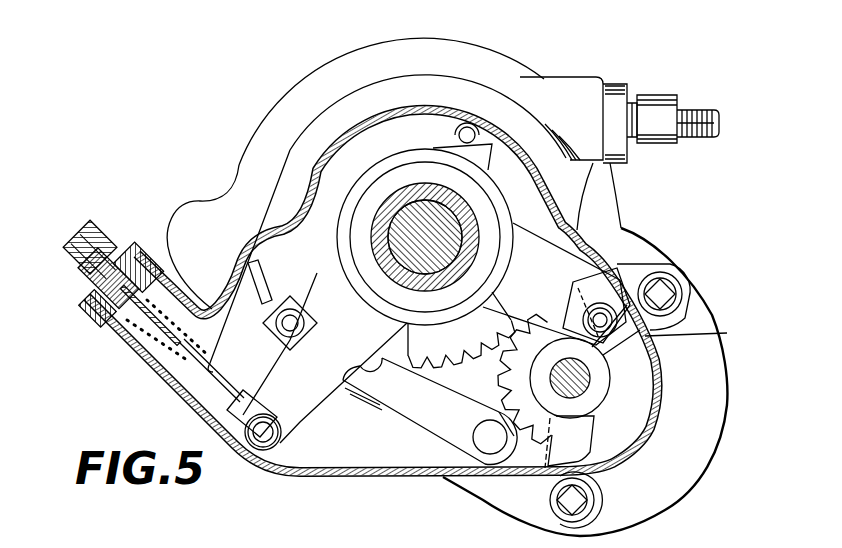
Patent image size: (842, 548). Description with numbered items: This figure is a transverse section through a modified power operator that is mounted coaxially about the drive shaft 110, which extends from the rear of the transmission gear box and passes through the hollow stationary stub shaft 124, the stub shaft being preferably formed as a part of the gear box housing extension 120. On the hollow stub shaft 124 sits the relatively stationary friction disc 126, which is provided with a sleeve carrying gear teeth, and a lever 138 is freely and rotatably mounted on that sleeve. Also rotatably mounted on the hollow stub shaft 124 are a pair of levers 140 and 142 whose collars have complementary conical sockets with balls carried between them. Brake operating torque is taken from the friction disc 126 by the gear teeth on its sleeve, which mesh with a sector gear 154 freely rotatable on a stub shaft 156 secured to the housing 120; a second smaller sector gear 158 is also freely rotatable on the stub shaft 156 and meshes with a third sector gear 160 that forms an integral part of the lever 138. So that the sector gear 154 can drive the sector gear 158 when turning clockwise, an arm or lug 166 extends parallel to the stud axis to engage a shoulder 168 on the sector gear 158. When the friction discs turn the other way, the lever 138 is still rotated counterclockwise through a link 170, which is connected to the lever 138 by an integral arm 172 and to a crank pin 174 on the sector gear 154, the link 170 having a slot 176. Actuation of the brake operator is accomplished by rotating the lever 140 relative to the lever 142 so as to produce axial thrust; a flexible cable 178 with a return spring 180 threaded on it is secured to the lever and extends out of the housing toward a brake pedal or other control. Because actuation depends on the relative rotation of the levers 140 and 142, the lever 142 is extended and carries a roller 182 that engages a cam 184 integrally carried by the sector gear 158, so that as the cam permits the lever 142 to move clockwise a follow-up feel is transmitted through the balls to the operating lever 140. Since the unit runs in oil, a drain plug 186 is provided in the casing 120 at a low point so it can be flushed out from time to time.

The drive shaft 110 is at (397, 229).
The gear box housing extension 120 is at (318, 168).
The stationary stub shaft 124 is at (390, 203).
The friction disc 126 is at (245, 260).
The lever 138 is at (450, 140).
The lever 140 is at (303, 403).
The lever 142 is at (592, 268).
The sector gear 154 is at (584, 238).
The stub shaft 156 is at (580, 383).
The second smaller sector gear 158 is at (483, 455).
The third sector gear 160 is at (422, 396).
The arm or lug 166 is at (578, 439).
The shoulder 168 is at (523, 437).
The link 170 is at (441, 352).
The integral arm 172 is at (307, 296).
The crank pin 174 is at (445, 428).
The slot 176 is at (372, 390).
The flexible cable 178 is at (147, 333).
The return spring 180 is at (127, 347).
The roller 182 is at (717, 336).
The cam 184 is at (608, 377).
The drain plug 186 is at (593, 517).